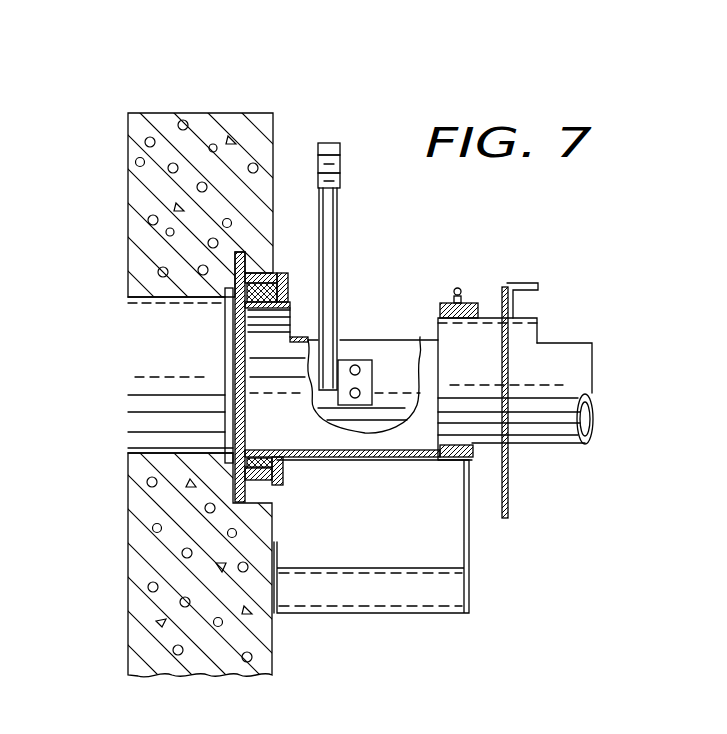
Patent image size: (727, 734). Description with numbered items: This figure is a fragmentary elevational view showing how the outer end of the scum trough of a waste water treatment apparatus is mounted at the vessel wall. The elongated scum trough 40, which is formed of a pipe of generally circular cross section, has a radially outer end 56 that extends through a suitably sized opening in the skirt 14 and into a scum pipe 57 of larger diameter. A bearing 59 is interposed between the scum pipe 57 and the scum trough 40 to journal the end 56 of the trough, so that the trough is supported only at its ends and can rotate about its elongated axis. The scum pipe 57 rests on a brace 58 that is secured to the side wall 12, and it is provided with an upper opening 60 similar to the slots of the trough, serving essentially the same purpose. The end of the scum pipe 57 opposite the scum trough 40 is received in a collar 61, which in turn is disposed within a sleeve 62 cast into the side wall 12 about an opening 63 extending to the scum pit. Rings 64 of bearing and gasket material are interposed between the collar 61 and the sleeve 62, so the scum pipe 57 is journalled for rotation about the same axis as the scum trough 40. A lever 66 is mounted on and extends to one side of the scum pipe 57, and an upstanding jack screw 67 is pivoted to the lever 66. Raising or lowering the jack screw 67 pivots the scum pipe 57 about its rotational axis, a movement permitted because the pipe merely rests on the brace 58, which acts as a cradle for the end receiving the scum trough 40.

The side wall 12 is at (273, 648).
The skirt 14 is at (508, 500).
The scum trough 40 is at (548, 442).
The radially outer end 56 is at (483, 337).
The scum pipe 57 is at (371, 460).
The brace 58 is at (470, 585).
The bearing 59 is at (440, 312).
The upper opening 60 is at (352, 328).
The collar 61 is at (290, 290).
The sleeve 62 is at (254, 278).
The opening 63 is at (165, 452).
The rings 64 is at (254, 481).
The lever 66 is at (343, 362).
The jack screw 67 is at (343, 197).